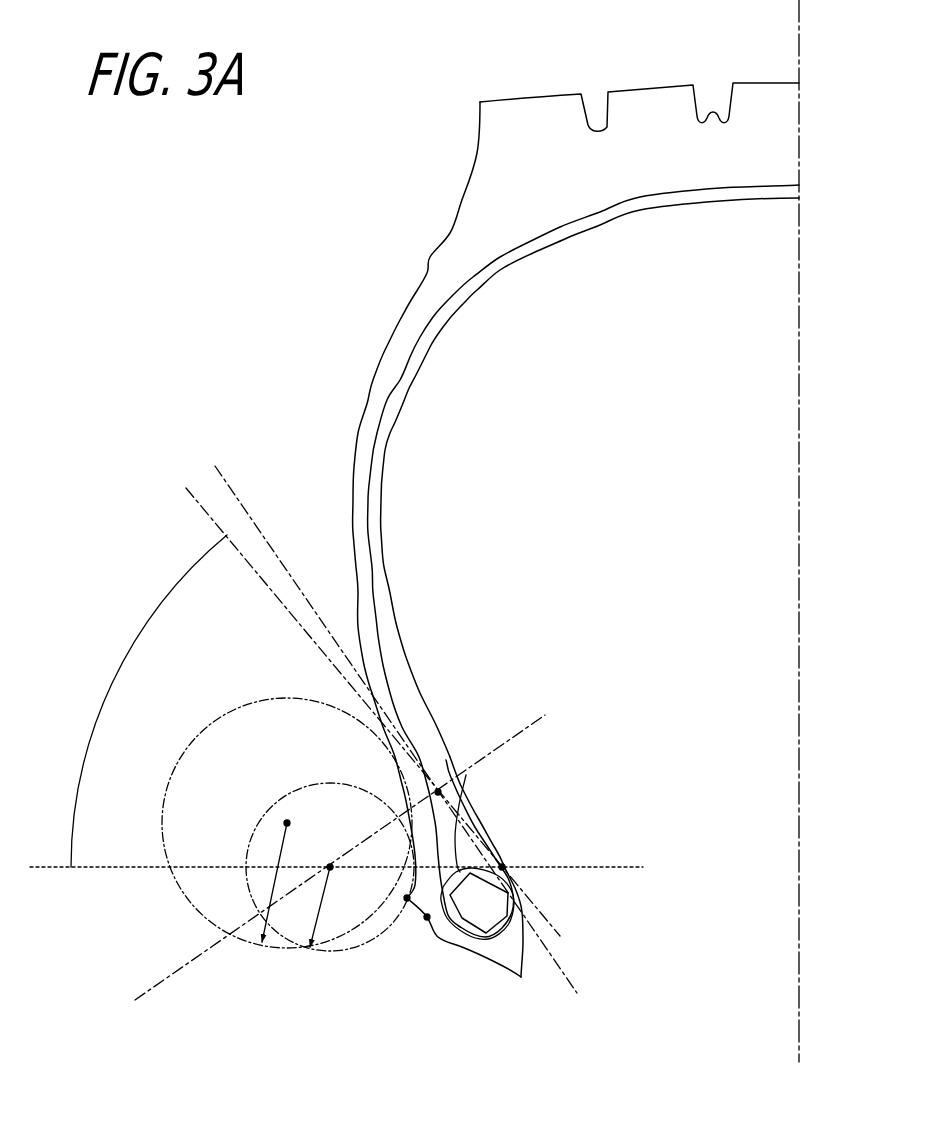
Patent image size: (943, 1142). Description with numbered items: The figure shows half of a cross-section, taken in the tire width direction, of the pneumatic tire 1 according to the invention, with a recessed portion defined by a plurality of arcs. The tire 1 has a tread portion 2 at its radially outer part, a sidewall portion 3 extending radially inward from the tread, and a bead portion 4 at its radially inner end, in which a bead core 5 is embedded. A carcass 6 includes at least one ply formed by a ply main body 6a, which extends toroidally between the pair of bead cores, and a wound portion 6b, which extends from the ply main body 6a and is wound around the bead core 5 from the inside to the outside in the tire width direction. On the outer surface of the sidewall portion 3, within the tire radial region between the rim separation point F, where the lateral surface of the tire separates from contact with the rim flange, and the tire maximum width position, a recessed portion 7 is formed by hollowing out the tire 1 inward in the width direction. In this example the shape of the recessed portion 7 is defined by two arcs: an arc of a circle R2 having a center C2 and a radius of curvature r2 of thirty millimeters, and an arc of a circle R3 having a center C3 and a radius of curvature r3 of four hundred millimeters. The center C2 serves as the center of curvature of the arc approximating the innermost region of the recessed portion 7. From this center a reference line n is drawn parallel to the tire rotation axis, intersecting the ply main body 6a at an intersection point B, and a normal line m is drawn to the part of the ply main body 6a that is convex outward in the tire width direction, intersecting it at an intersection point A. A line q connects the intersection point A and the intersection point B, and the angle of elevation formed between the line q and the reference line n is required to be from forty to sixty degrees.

The tire 1 is at (385, 72).
The tread portion 2 is at (663, 83).
The sidewall portion 3 is at (398, 317).
The bead portion 4 is at (494, 789).
The bead core 5 is at (490, 913).
The carcass 6 is at (502, 437).
The ply main body 6a is at (373, 453).
The wound portion 6b is at (466, 775).
The recessed portion 7 is at (386, 778).
The intersection point A is at (439, 791).
The intersection point B is at (503, 865).
The center C2 is at (337, 877).
The center C3 is at (302, 819).
The rim separation point F is at (427, 918).
The circle R2 is at (327, 950).
The circle R3 is at (190, 740).
The radius of curvature r2 is at (320, 912).
The radius of curvature r3 is at (270, 878).
The reference line n is at (347, 866).
The normal line m is at (368, 741).
The line q is at (383, 720).